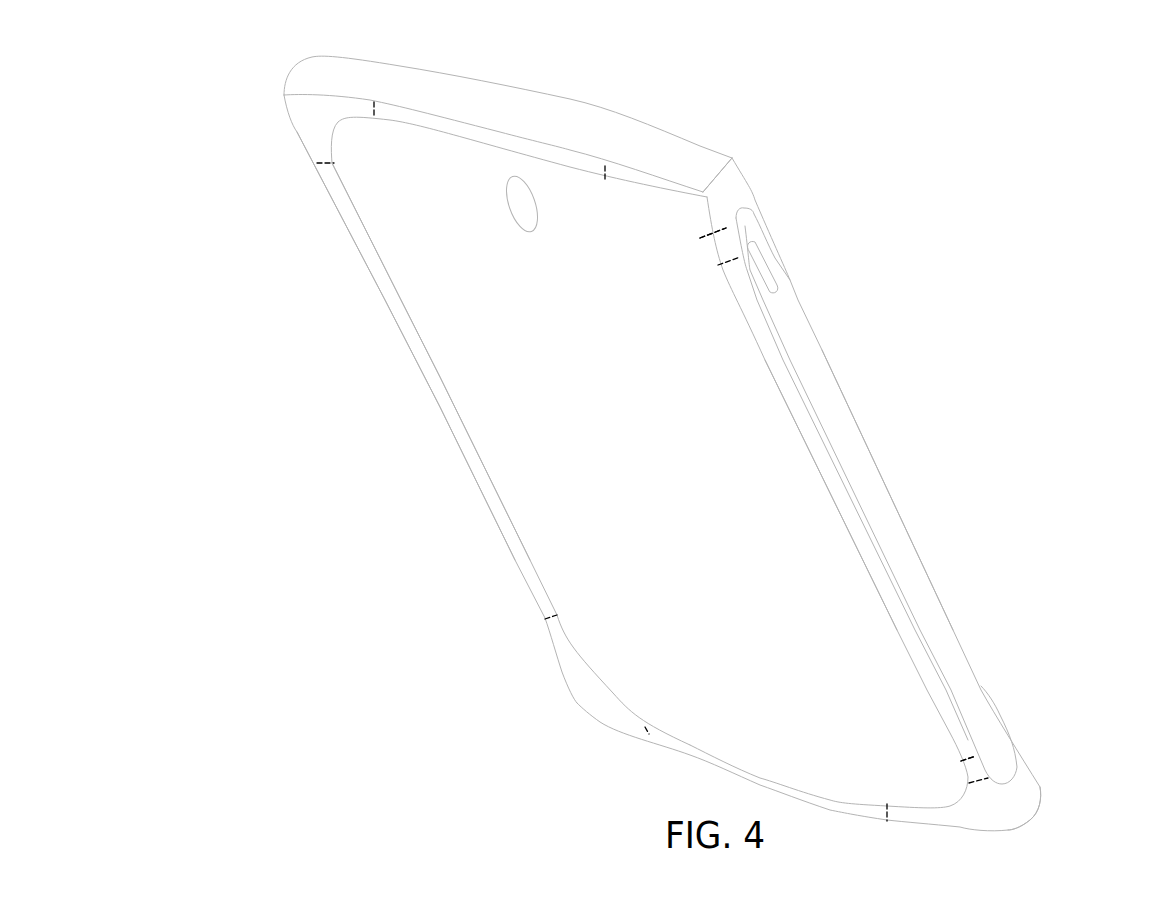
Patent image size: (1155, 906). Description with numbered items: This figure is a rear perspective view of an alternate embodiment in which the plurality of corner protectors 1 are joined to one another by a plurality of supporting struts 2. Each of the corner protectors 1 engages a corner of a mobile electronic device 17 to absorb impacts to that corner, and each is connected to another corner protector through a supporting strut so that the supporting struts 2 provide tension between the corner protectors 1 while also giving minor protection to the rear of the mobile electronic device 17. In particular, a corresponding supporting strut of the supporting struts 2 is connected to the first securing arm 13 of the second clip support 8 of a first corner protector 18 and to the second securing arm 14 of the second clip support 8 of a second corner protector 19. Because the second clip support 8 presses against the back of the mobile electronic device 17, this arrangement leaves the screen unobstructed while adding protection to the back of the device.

The corner protectors 1 is at (293, 100).
The supporting struts 2 is at (556, 158).
The second clip support 8 is at (653, 238).
The first securing arm 13 is at (714, 240).
The second securing arm 14 is at (960, 767).
The mobile electronic device 17 is at (875, 493).
The first corner protector 18 is at (755, 152).
The second corner protector 19 is at (1064, 758).